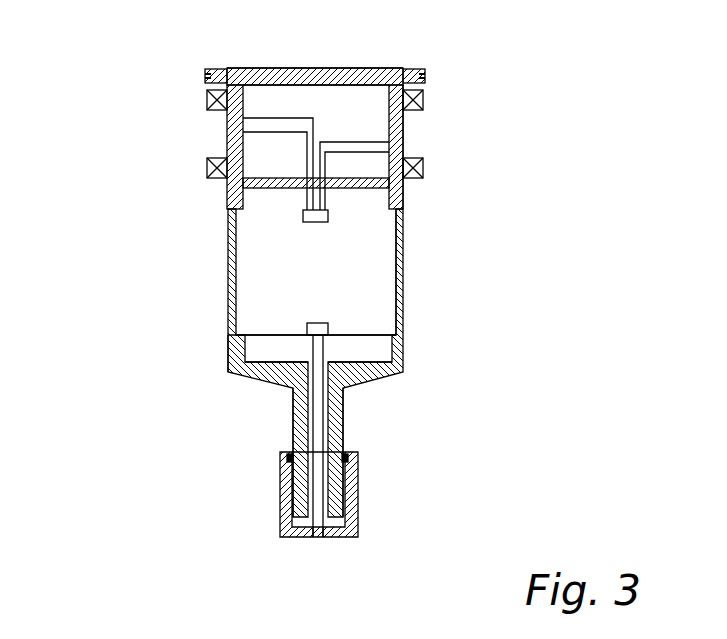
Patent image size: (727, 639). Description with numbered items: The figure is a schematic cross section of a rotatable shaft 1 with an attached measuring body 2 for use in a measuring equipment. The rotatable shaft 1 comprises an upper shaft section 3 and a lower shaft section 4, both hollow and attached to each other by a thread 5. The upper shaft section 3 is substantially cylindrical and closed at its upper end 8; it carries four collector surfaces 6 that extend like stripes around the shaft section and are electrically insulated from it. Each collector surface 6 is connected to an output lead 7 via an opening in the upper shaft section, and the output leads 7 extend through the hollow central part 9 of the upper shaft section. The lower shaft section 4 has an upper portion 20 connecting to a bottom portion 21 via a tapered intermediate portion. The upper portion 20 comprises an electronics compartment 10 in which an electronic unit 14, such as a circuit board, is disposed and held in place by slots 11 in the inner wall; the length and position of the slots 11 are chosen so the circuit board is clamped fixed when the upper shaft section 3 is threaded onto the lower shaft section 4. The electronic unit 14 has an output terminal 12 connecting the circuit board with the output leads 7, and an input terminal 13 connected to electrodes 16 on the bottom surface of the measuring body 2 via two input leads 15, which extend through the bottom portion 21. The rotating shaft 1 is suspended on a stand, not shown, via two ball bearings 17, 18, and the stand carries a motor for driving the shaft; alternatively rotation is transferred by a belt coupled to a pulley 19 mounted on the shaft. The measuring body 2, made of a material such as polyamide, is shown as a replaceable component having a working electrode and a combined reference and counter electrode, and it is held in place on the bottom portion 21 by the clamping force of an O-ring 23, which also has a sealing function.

The rotatable shaft 1 is at (132, 276).
The measuring body 2 is at (280, 512).
The upper shaft section 3 is at (228, 195).
The lower shaft section 4 is at (228, 222).
The thread 5 is at (405, 204).
The collector surfaces 6 is at (405, 129).
The output leads 7 is at (352, 142).
The upper end 8 is at (362, 67).
The hollow central part 9 is at (264, 63).
The electronics compartment 10 is at (376, 352).
The slots 11 is at (401, 293).
The output terminal 12 is at (328, 216).
The input terminal 13 is at (307, 327).
The electronic unit 14 is at (388, 317).
The input leads 15 is at (323, 423).
The electrodes 16 is at (323, 540).
The ball bearing 17 is at (207, 166).
The ball bearing 18 is at (207, 100).
The pulley 19 is at (208, 70).
The upper portion 20 is at (228, 348).
The bottom portion 21 is at (293, 404).
The O-ring 23 is at (288, 459).